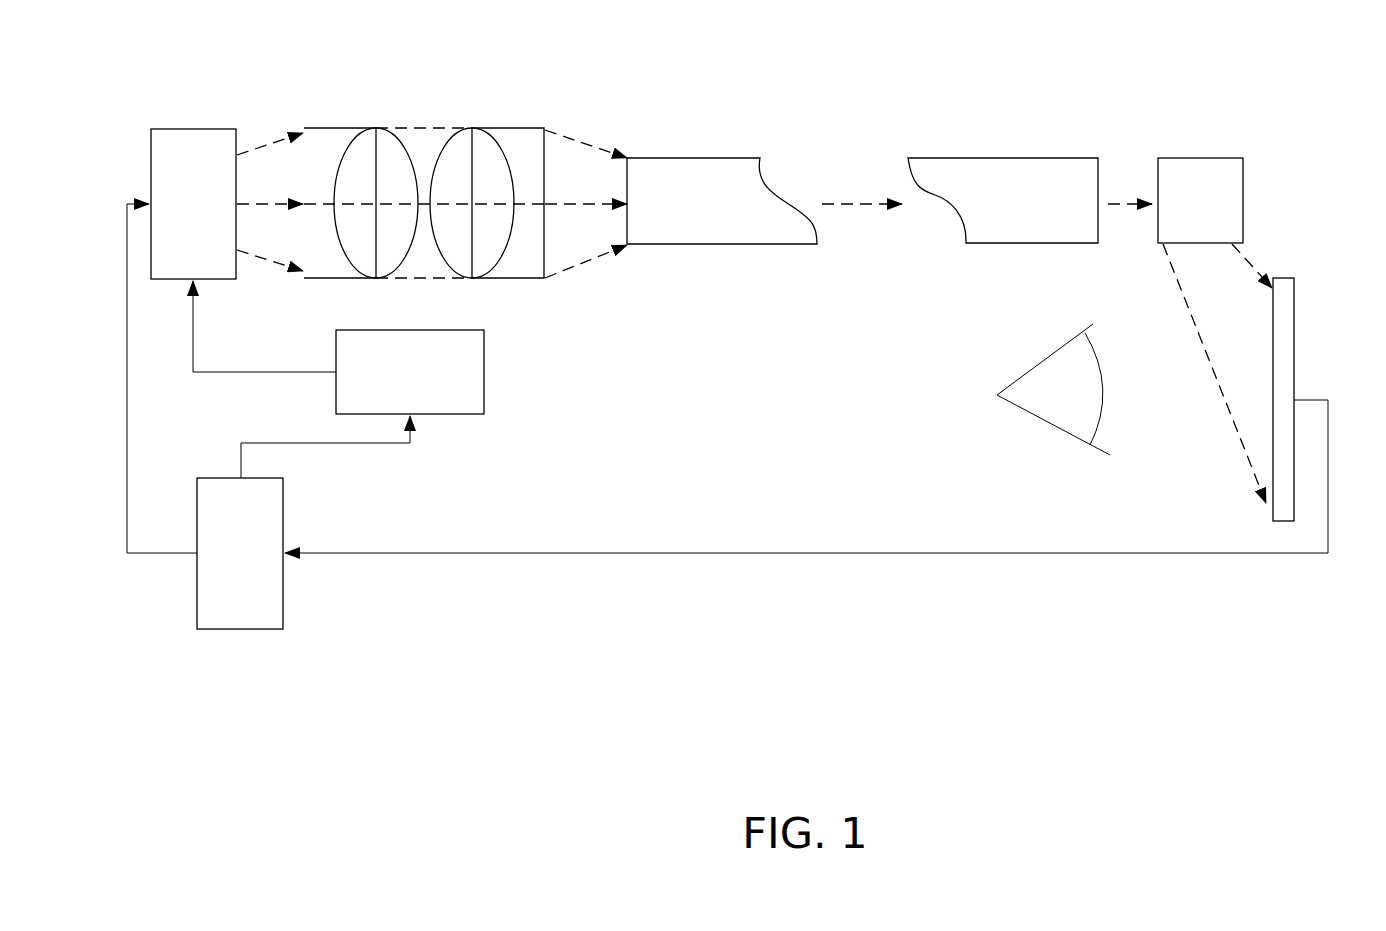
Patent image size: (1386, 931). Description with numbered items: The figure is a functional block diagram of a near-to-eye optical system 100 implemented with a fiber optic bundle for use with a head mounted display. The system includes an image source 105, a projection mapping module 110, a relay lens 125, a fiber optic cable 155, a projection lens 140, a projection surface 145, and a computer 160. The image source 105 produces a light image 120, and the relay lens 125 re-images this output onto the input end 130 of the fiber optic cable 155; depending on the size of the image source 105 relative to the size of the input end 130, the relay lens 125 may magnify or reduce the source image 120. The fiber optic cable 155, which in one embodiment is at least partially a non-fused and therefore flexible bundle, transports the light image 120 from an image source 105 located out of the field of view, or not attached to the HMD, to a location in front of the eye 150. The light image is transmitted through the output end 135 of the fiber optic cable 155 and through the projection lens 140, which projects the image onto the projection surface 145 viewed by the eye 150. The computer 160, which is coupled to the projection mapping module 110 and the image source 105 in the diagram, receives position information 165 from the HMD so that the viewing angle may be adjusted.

The near-to-eye optical system 100 is at (1107, 643).
The image source 105 is at (176, 215).
The projection mapping module 110 is at (392, 383).
The light image 120 is at (340, 128).
The relay lens 125 is at (518, 128).
The input end of the fiber optic cable 130 is at (667, 137).
The output end of the fiber optic cable 135 is at (1083, 137).
The projection lens 140 is at (1182, 215).
The projection surface 145 is at (1315, 273).
The eye 150 is at (1042, 407).
The fiber optic cable 155 is at (694, 215).
The computer 160 is at (222, 564).
The position information 165 is at (720, 540).